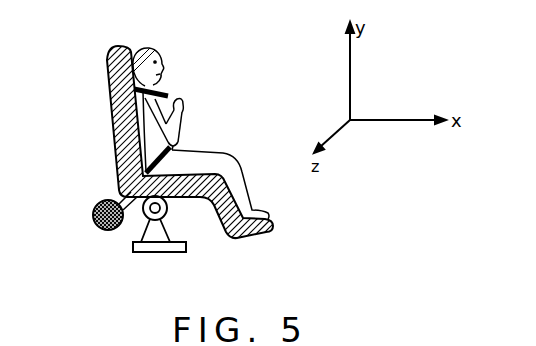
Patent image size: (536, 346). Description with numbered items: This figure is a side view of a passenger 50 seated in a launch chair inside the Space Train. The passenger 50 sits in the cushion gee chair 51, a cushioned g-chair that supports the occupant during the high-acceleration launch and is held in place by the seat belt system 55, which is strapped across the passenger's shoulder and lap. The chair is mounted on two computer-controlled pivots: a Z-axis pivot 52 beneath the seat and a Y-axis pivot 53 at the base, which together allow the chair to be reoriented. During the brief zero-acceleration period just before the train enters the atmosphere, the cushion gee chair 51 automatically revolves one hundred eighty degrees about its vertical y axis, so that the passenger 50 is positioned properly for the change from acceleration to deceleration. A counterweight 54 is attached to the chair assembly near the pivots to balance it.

The passenger 50 is at (206, 150).
The cushion gee chair 51 is at (113, 108).
The Z-axis pivot 52 is at (159, 210).
The Y-axis pivot 53 is at (155, 253).
The counterweight 54 is at (94, 214).
The seat belt system 55 is at (168, 94).